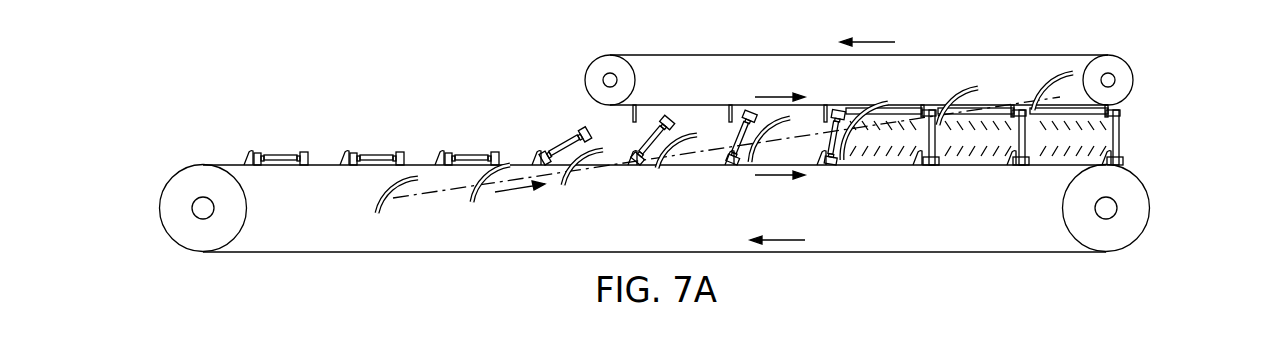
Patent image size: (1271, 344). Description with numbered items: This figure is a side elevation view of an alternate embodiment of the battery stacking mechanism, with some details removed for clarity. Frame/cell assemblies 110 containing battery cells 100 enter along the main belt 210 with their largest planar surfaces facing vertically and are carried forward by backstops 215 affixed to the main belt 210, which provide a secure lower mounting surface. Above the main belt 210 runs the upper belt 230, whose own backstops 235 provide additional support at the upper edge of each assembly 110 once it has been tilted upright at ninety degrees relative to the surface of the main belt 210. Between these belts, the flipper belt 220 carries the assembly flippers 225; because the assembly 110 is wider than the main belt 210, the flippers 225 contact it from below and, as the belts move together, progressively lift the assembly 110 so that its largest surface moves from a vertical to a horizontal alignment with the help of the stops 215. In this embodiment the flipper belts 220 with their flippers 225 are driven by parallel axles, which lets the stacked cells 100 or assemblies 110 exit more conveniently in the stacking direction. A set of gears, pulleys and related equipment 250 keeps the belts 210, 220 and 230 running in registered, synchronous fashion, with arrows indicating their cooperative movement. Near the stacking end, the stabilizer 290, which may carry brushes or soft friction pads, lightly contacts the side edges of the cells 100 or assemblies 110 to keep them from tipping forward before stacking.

The battery cell 100 is at (549, 133).
The frame/cell assembly 110 is at (300, 121).
The main belt 210 is at (342, 254).
The backstop 215 is at (247, 156).
The flipper belt 220 is at (433, 192).
The assembly flipper 225 is at (475, 198).
The upper belt 230 is at (793, 53).
The backstop 235 is at (727, 116).
The gears, pulleys and related equipment 250 is at (248, 207).
The stabilizer 290 is at (980, 160).